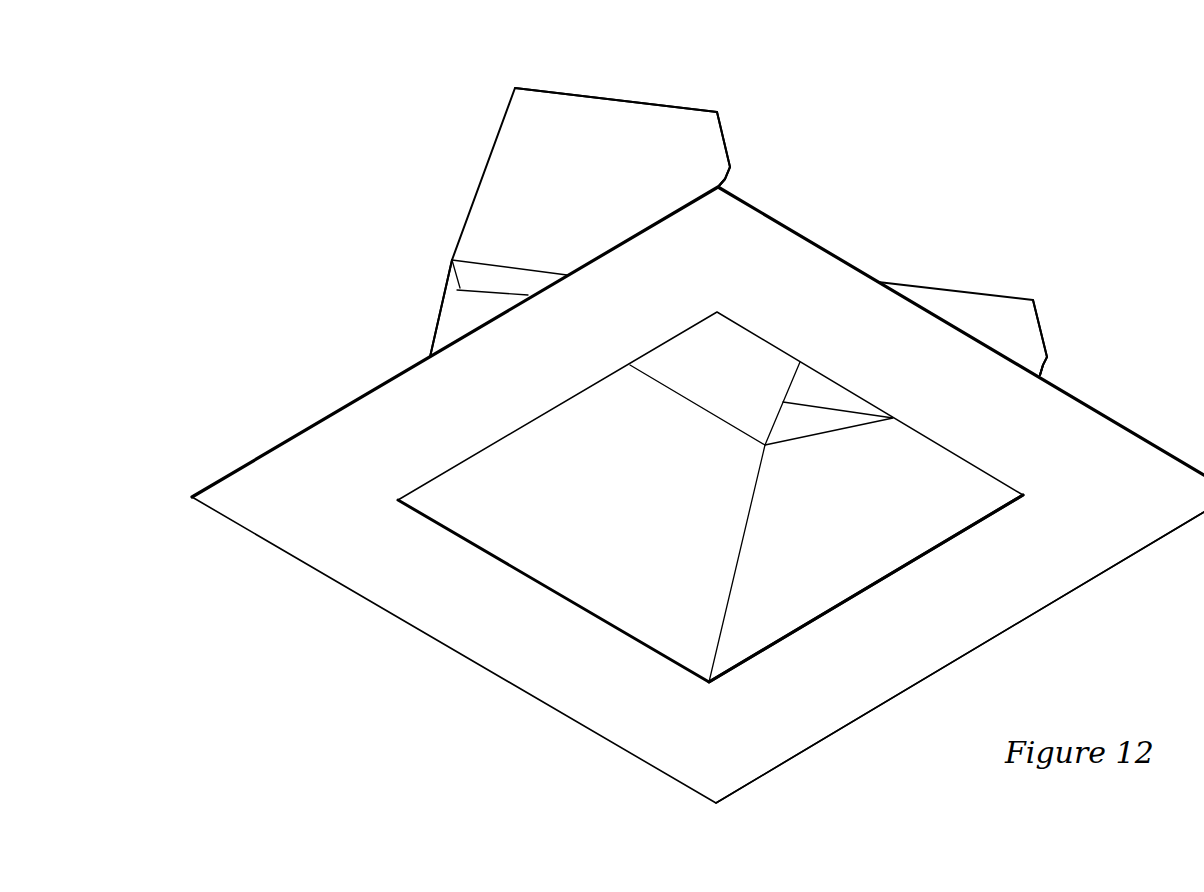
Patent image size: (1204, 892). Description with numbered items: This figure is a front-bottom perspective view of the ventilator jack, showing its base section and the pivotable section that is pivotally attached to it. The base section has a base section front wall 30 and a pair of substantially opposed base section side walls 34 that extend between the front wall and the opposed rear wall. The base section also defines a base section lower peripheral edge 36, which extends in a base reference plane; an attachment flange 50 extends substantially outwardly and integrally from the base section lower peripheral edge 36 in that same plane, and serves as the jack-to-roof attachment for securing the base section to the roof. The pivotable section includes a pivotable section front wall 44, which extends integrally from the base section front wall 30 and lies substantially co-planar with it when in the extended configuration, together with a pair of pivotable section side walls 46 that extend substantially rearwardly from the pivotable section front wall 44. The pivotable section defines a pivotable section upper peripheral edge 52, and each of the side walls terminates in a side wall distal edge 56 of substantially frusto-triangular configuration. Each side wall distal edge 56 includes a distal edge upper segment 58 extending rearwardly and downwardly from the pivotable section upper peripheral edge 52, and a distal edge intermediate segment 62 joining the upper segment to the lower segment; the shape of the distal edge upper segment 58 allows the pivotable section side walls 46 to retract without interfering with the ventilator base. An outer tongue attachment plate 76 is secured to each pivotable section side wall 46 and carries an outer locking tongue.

The base section front wall 30 is at (610, 575).
The base section side walls 34 is at (452, 322).
The base section lower peripheral edge 36 is at (973, 528).
The pivotable section front wall 44 is at (738, 345).
The pivotable section side walls 46 is at (608, 128).
The attachment flange 50 is at (1108, 552).
The pivotable section upper peripheral edge 52 is at (663, 105).
The side wall distal edge 56 is at (802, 150).
The distal edge upper segment 58 is at (728, 140).
The distal edge intermediate segment 62 is at (727, 175).
The outer tongue attachment plate 76 is at (475, 282).